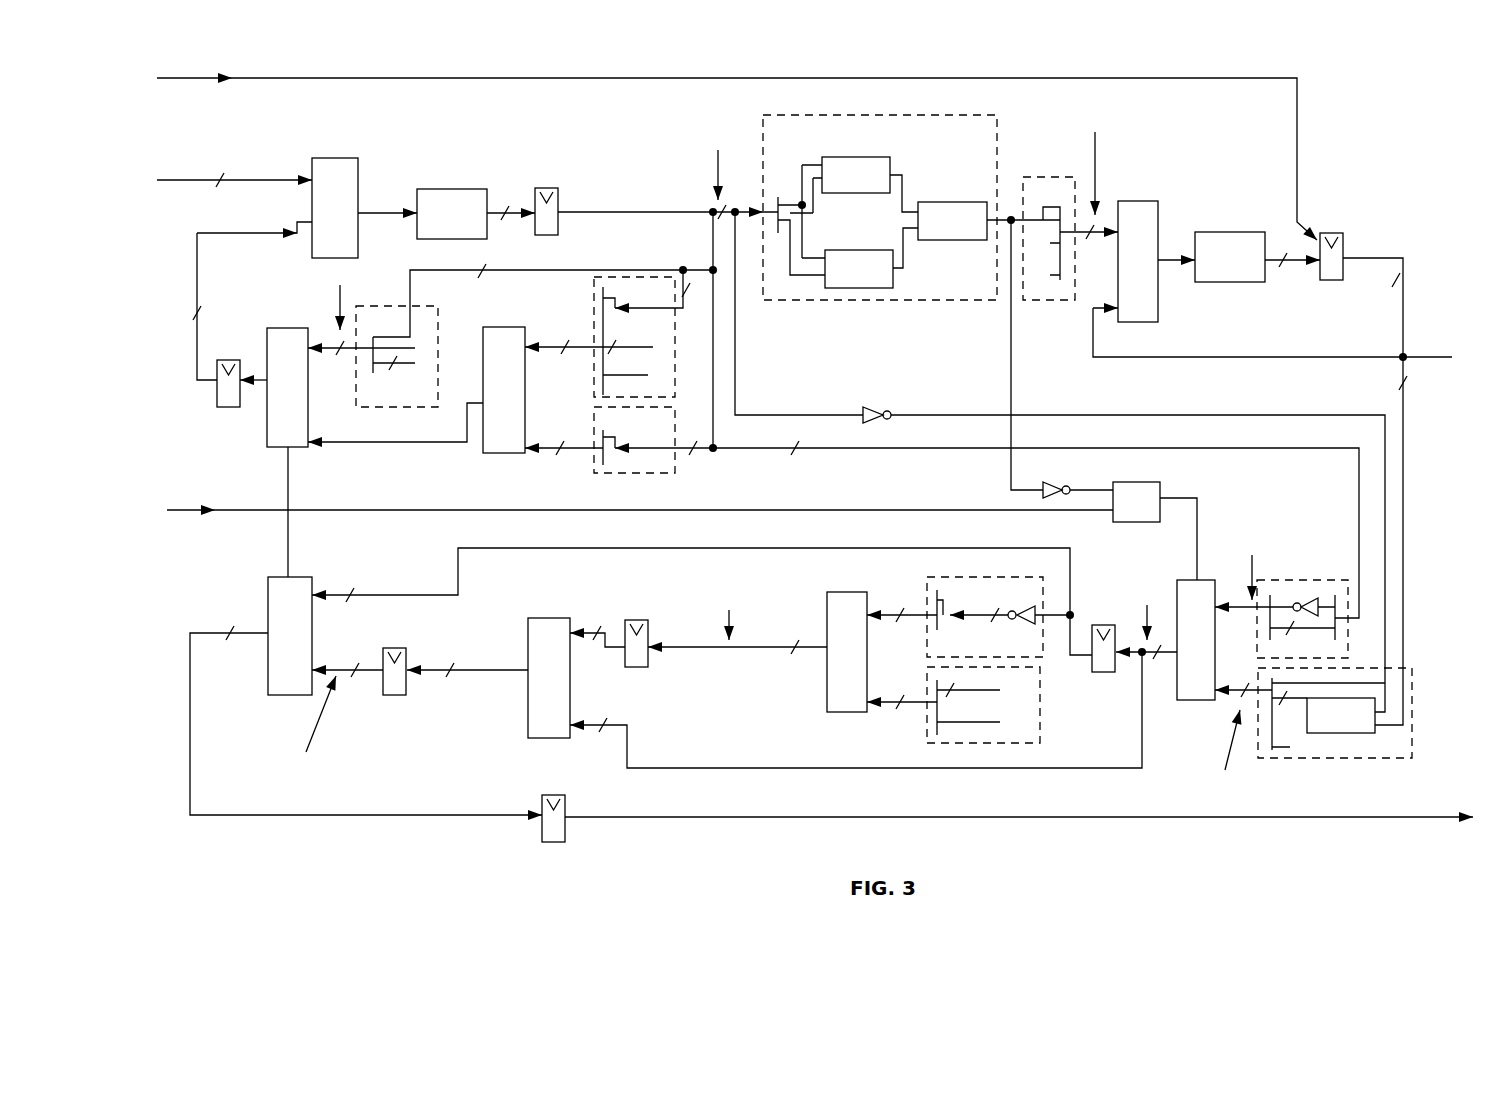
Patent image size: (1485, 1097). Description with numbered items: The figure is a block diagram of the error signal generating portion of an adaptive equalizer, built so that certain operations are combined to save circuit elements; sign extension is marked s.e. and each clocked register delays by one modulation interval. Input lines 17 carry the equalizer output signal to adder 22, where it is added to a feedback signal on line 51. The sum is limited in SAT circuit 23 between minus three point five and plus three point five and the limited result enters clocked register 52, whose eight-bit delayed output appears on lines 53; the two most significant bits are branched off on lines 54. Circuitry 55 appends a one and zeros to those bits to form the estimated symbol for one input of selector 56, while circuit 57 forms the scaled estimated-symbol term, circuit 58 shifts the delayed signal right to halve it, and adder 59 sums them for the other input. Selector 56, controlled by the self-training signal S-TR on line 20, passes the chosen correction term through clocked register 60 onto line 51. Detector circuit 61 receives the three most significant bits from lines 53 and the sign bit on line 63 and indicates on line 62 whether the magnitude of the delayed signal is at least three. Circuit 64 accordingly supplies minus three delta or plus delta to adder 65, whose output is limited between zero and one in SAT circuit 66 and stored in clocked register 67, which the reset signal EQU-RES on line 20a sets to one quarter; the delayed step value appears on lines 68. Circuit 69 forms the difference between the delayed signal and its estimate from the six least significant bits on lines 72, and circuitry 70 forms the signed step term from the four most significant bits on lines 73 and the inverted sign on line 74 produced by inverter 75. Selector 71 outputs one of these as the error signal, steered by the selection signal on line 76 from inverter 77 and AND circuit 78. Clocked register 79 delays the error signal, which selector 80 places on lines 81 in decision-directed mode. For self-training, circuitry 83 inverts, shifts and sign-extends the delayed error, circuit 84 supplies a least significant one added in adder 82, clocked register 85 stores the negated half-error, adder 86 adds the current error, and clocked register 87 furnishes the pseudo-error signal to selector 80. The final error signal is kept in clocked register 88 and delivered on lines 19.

The input lines 17 is at (253, 172).
The output lines 19 is at (658, 814).
The S-TR line 20 is at (185, 512).
The EQU-RES line 20a is at (769, 145).
The adder 22 is at (307, 194).
The SAT circuit 23 is at (453, 209).
The feedback line 51 is at (192, 276).
The clocked register 52 is at (560, 222).
The lines 53 is at (640, 222).
The lines 54 is at (512, 262).
The circuitry 55 is at (448, 374).
The selector 56 is at (341, 438).
The circuit 57 is at (675, 340).
The circuit 58 is at (625, 473).
The adder 59 is at (416, 376).
The clocked register 60 is at (241, 370).
The detector circuit 61 is at (880, 194).
The output line 62 is at (1006, 376).
The line 63 is at (746, 374).
The circuit 64 is at (1070, 224).
The adder 65 is at (1251, 229).
The SAT circuit 66 is at (1246, 259).
The clocked register 67 is at (1332, 275).
The lines 68 is at (1403, 340).
The circuit 69 is at (1276, 593).
The circuitry 70 is at (1313, 726).
The selector 71 is at (1188, 695).
The lines 72 is at (938, 450).
The lines 73 is at (1403, 487).
The line 74 is at (1385, 449).
The inverter 75 is at (878, 401).
The selection line 76 is at (1172, 500).
The inverter 77 is at (1078, 476).
The AND circuit 78 is at (1136, 517).
The clocked register 79 is at (714, 625).
The selector 80 is at (264, 590).
The lines 81 is at (190, 736).
The adder 82 is at (757, 667).
The circuitry 83 is at (972, 572).
The circuit 84 is at (1043, 732).
The clocked register 85 is at (609, 630).
The adder 86 is at (774, 679).
The clocked register 87 is at (317, 709).
The clocked register 88 is at (554, 805).